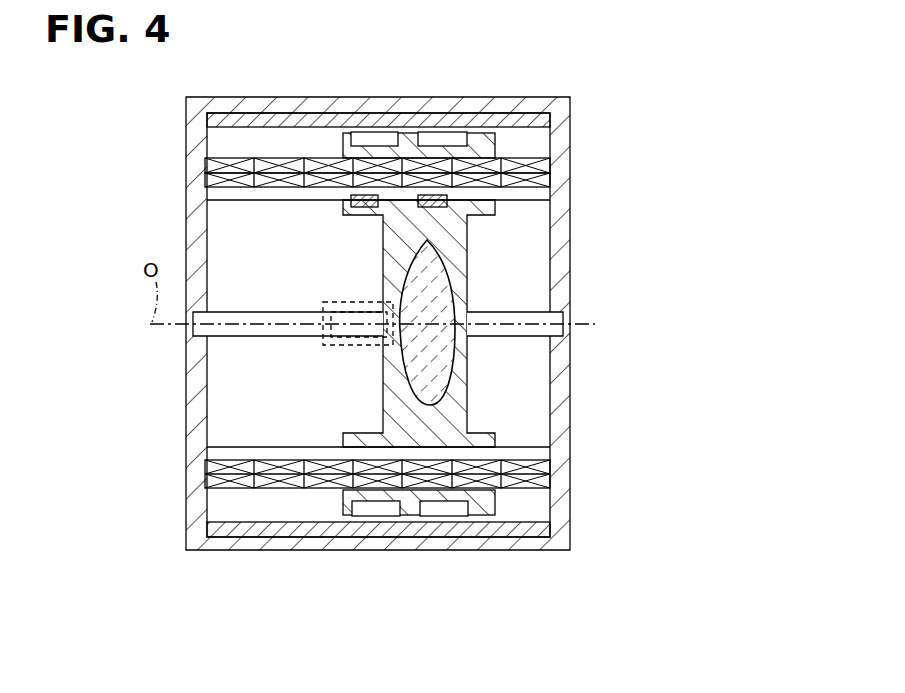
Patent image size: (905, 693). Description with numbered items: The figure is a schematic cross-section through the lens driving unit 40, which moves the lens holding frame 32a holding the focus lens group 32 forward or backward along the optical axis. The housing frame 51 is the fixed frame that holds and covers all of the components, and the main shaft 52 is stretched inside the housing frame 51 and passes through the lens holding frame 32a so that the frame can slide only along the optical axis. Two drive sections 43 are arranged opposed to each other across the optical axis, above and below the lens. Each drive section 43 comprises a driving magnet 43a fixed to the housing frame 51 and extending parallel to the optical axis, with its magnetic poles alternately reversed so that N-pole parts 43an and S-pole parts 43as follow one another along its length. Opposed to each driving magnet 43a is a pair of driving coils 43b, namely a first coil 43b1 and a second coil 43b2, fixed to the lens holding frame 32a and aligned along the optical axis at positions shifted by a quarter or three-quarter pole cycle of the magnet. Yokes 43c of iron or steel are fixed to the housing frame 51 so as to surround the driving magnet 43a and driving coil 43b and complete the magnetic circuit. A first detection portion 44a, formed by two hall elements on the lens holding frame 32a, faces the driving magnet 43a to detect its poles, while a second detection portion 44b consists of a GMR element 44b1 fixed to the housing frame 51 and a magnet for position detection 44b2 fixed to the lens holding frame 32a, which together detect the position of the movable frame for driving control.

The lens driving unit 40 is at (127, 181).
The drive section 43 is at (483, 277).
The driving magnet 43a is at (434, 277).
The N-pole part of the driving magnet 43an is at (548, 167).
The S-pole part of the driving magnet 43as is at (548, 183).
The driving coil 43b is at (424, 277).
The first coil 43b1 is at (372, 138).
The second coil 43b2 is at (448, 140).
The yokes 43c is at (525, 170).
The first detection portion 44a is at (418, 208).
The second detection portion 44b is at (217, 352).
The GMR element 44b1 is at (333, 347).
The magnet for position detection 44b2 is at (333, 323).
The focus lens group 32 is at (423, 275).
The lens holding frame 32a is at (460, 290).
The housing frame 51 is at (565, 383).
The main shaft 52 is at (565, 318).